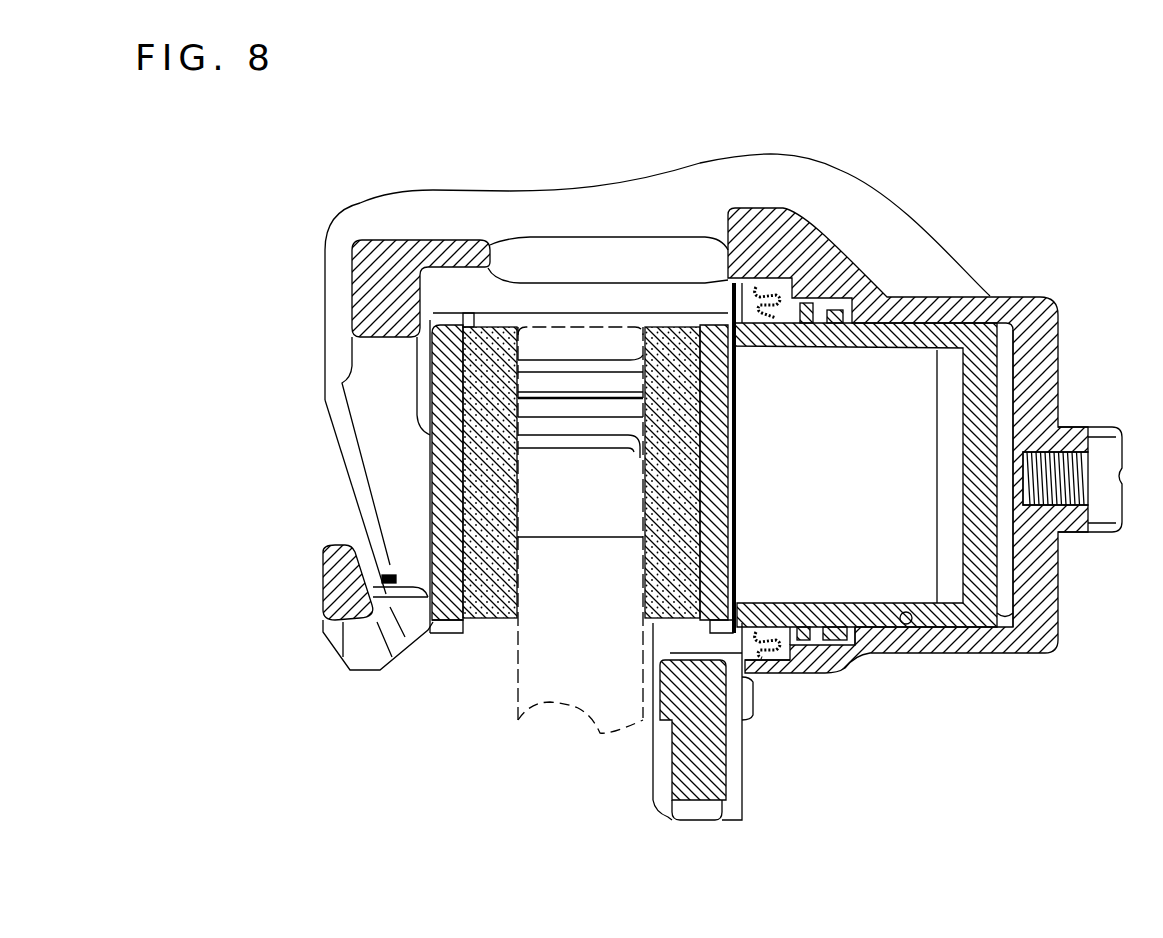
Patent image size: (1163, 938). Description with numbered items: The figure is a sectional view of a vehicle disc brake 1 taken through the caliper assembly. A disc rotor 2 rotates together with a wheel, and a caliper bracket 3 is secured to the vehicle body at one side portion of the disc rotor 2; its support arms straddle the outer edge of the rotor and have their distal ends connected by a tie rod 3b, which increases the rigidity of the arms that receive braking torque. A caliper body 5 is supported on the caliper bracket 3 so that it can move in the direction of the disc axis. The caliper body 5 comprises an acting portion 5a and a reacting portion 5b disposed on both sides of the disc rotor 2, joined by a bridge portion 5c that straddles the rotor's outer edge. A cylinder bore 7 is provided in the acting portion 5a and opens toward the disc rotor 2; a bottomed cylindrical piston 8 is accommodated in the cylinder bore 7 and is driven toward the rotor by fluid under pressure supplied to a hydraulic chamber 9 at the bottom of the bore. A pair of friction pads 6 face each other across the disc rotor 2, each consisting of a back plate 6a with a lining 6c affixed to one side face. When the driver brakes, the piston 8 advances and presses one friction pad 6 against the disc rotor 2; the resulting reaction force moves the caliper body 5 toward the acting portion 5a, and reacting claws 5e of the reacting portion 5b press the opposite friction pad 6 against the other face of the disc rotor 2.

The disc brake device 1 is at (703, 148).
The disc rotor 2 is at (578, 705).
The caliper bracket 3 is at (748, 751).
The tie rod 3b is at (337, 580).
The caliper body 5 is at (817, 170).
The acting portion 5a is at (1045, 566).
The reacting portion 5b is at (363, 294).
The bridge portion 5c is at (535, 197).
The reacting claws 5e is at (382, 532).
The friction pad 6 is at (636, 492).
The back plate 6a is at (447, 618).
The lining 6c is at (483, 618).
The cylinder bore 7 is at (906, 624).
The piston 8 is at (965, 330).
The hydraulic chamber 9 is at (1007, 375).